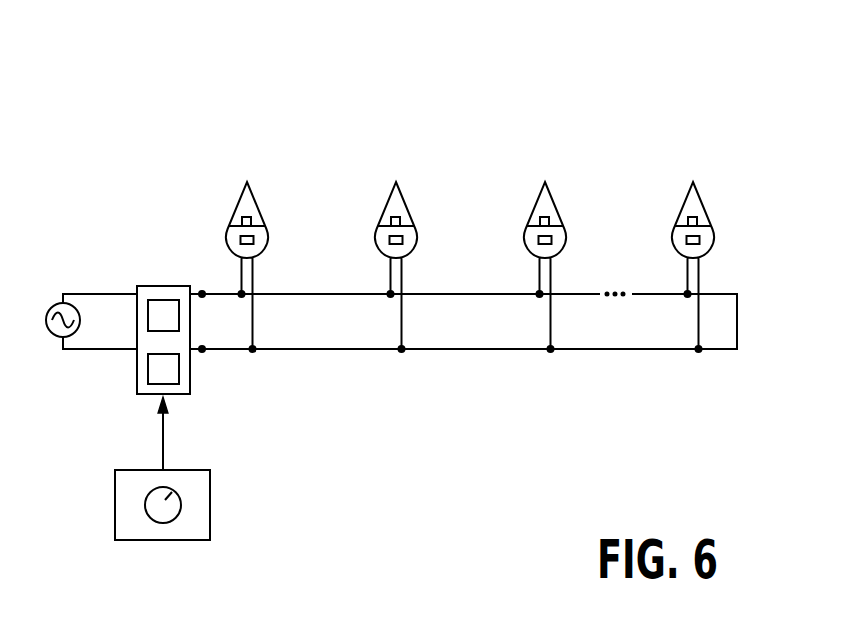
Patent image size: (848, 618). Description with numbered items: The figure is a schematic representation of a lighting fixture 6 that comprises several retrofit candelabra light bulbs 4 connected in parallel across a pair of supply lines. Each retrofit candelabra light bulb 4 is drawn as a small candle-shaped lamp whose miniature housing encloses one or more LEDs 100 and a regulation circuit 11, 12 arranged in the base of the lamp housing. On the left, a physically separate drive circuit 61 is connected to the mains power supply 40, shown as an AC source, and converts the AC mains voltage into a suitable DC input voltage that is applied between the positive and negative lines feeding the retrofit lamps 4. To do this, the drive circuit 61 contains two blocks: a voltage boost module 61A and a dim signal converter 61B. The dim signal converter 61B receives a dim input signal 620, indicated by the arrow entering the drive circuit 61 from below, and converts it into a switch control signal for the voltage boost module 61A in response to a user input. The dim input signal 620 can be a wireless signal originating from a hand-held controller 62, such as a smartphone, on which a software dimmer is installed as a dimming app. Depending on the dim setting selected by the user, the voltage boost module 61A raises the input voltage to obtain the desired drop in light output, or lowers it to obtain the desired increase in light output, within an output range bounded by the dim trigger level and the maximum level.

The retrofit candelabra light bulb 4 is at (499, 252).
The lighting fixture 6 is at (423, 306).
The regulation circuit 11 is at (527, 249).
The regulation circuit 12 is at (267, 245).
The mains power supply 40 is at (51, 308).
The drive circuit 61 is at (205, 309).
The voltage boost module 61A is at (168, 300).
The dim signal converter 61B is at (180, 369).
The hand-held controller 62 is at (210, 507).
The LED 100 is at (260, 215).
The dim input signal 620 is at (163, 438).